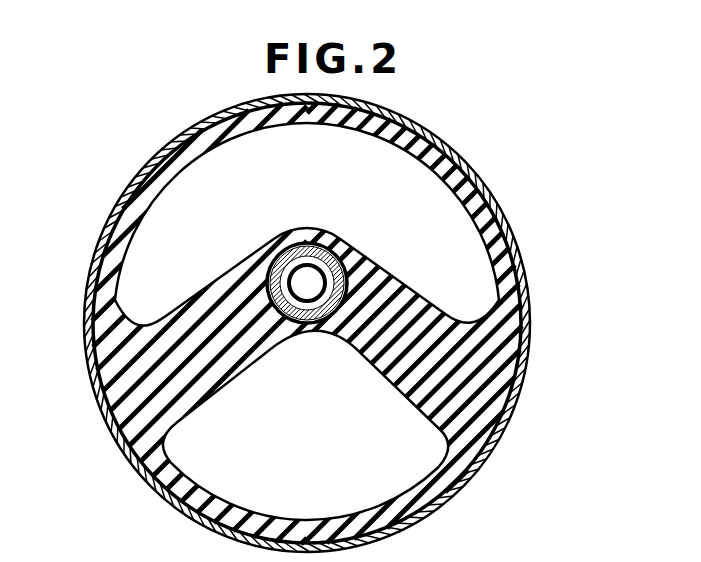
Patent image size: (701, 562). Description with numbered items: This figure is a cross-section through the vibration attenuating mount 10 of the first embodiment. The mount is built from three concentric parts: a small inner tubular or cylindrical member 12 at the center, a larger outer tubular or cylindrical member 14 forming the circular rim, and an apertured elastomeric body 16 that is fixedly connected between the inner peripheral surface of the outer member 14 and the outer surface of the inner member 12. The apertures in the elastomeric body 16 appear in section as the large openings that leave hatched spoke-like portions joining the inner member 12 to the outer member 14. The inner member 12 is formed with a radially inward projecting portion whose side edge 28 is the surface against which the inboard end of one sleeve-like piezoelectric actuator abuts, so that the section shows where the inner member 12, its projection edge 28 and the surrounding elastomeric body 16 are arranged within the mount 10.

The vibration attenuating mount 10 is at (462, 150).
The inner tubular member 12 is at (336, 240).
The outer tubular member 14 is at (483, 177).
The apertured elastomeric body 16 is at (387, 283).
The side edge of the inwardly extending projection 28 is at (276, 254).